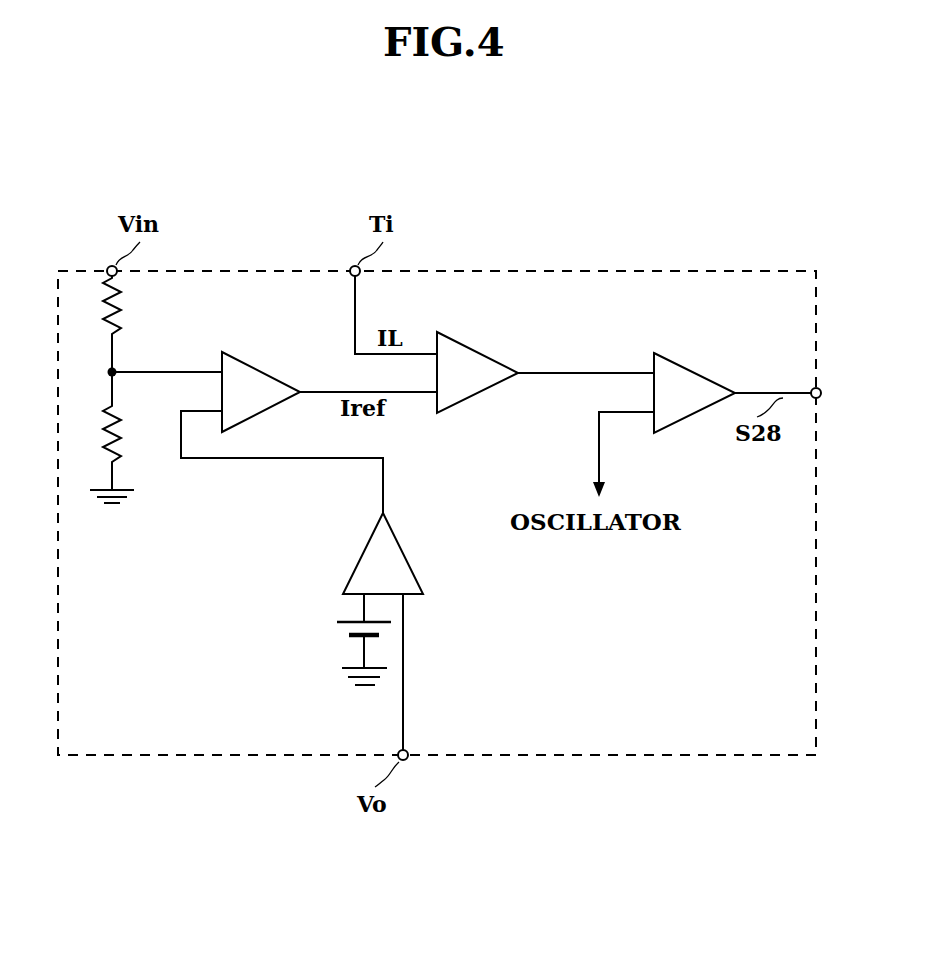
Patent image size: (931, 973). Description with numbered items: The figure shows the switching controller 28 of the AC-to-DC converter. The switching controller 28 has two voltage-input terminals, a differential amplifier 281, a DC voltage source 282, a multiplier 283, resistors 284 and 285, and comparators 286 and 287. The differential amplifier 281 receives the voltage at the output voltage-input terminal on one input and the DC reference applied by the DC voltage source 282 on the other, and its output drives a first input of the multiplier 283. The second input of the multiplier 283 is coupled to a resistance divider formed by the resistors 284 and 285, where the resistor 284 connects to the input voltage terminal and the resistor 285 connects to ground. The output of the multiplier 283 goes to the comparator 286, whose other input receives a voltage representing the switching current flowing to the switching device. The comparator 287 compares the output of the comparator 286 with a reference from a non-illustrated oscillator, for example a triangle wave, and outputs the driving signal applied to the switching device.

The switching controller 28 is at (562, 270).
The differential amplifier 281 is at (403, 548).
The DC voltage source 282 is at (343, 633).
The multiplier 283 is at (276, 374).
The resistor 284 is at (120, 306).
The resistor 285 is at (122, 450).
The comparator 286 is at (489, 358).
The comparator 287 is at (708, 378).